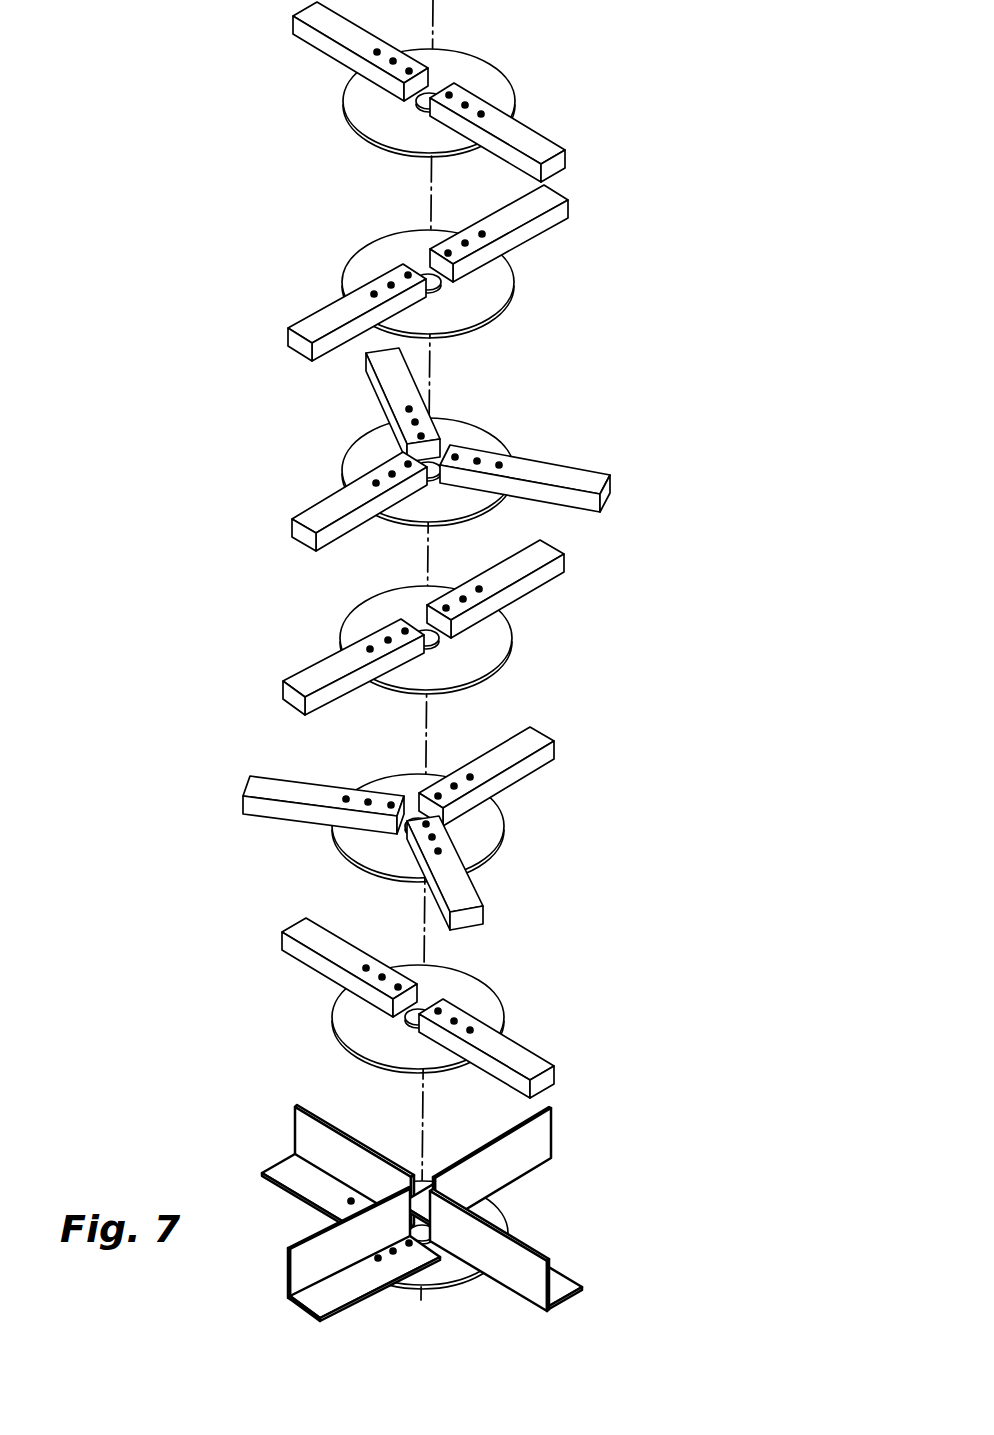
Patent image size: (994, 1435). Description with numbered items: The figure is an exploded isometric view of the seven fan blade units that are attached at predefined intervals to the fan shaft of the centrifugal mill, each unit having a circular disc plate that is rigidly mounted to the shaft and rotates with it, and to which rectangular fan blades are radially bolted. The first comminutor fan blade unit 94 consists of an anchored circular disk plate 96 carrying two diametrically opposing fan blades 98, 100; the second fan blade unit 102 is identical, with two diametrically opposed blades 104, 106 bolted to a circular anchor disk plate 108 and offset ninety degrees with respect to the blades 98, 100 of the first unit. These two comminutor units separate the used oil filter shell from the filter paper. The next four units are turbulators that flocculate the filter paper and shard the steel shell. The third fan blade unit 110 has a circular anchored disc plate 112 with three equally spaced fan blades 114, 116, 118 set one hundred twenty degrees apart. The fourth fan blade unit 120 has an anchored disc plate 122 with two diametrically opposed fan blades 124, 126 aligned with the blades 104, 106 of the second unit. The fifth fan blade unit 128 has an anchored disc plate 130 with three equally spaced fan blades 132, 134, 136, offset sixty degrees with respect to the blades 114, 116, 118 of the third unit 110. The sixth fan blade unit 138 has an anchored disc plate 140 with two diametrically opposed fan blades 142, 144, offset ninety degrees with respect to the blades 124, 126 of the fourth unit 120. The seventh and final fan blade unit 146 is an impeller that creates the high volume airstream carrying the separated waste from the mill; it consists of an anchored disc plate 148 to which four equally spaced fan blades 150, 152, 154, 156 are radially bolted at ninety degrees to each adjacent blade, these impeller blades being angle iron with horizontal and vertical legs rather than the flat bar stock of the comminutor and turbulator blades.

The first comminutor fan blade unit 94 is at (460, 92).
The anchored circular disk plate 96 is at (373, 120).
The fan blade 98 is at (538, 137).
The fan blade 100 is at (317, 43).
The second fan blade unit 102 is at (479, 273).
The fan blade 104 is at (552, 215).
The fan blade 106 is at (322, 315).
The circular anchor disk plate 108 is at (388, 253).
The third fan blade unit 110 is at (485, 452).
The circular anchored disc plate 112 is at (363, 457).
The fan blade 114 is at (555, 462).
The fan blade 116 is at (313, 512).
The fan blade 118 is at (390, 382).
The fourth fan blade unit 120 is at (497, 627).
The anchored disc plate 122 is at (495, 667).
The fan blade 124 is at (343, 672).
The fan blade 126 is at (547, 555).
The fifth fan blade unit 128 is at (482, 816).
The anchored disc plate 130 is at (410, 778).
The fan blade 132 is at (506, 873).
The fan blade 134 is at (297, 790).
The fan blade 136 is at (483, 765).
The sixth fan blade unit 138 is at (504, 981).
The anchored disc plate 140 is at (352, 1025).
The fan blade 142 is at (540, 1055).
The fan blade 144 is at (345, 928).
The seventh fan blade unit 146 is at (486, 1206).
The anchored disc plate 148 is at (423, 1298).
The fan blade 150 is at (547, 1272).
The fan blade 152 is at (340, 1222).
The fan blade 154 is at (315, 1115).
The fan blade 156 is at (548, 1158).